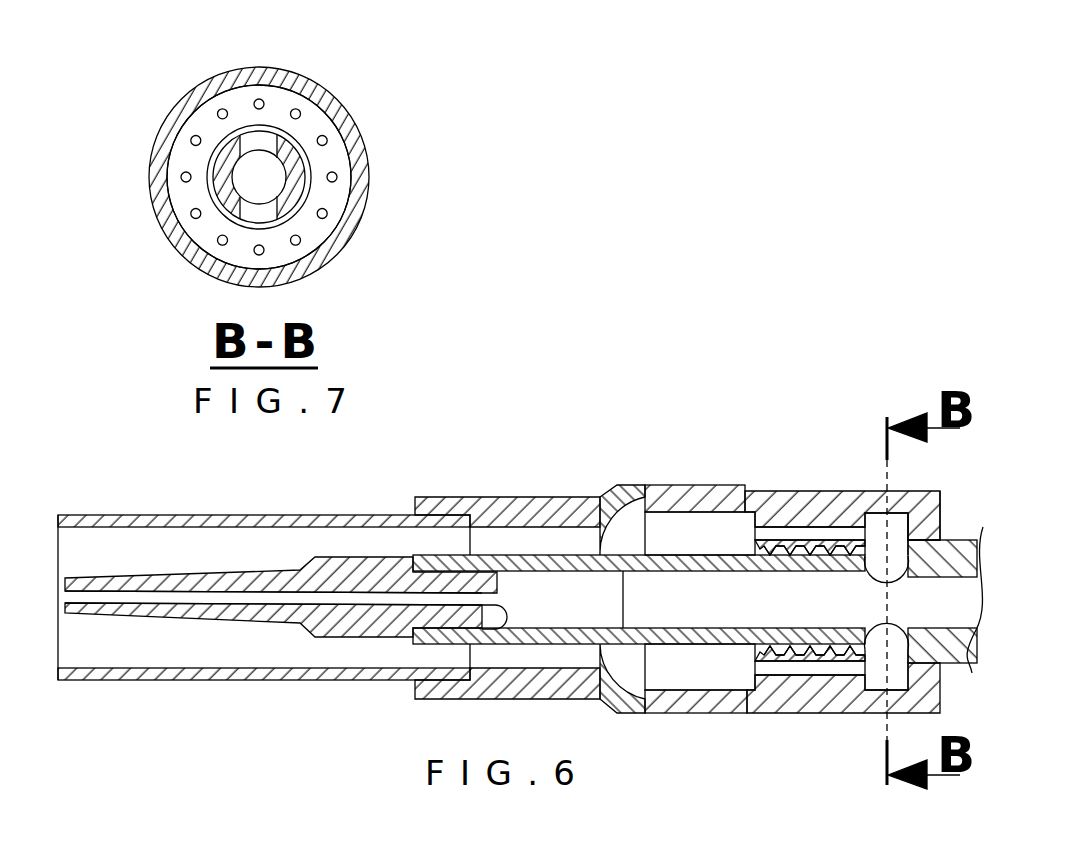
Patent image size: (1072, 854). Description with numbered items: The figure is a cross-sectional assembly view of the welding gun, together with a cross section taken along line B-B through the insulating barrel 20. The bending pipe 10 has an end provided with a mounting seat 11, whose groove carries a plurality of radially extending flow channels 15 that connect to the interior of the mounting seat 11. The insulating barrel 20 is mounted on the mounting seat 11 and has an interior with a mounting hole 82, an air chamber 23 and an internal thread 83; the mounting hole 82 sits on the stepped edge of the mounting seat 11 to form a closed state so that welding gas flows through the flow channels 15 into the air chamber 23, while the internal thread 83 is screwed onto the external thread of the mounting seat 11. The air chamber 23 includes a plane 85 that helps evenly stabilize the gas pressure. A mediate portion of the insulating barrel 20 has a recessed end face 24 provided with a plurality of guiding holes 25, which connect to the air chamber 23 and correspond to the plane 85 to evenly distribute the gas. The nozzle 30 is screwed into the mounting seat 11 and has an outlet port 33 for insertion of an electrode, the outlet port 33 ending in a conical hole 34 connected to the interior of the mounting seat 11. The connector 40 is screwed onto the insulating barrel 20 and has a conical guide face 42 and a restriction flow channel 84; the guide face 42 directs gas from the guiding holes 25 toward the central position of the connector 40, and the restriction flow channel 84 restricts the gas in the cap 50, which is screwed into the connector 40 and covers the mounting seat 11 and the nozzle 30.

In FIG. 6, the bending pipe 10 is at (965, 653).
In FIG. 7, the mounting seat 11 is at (290, 165).
In FIG. 6, the mounting seat 11 is at (553, 635).
In FIG. 7, the flow channels 15 is at (260, 140).
In FIG. 6, the flow channels 15 is at (890, 572).
In FIG. 7, the insulating barrel 20 is at (168, 138).
In FIG. 6, the insulating barrel 20 is at (793, 697).
In FIG. 6, the air chamber 23 is at (877, 513).
In FIG. 7, the recessed end face 24 is at (328, 200).
In FIG. 6, the recessed end face 24 is at (753, 658).
In FIG. 7, the guiding holes 25 is at (181, 177).
In FIG. 6, the guiding holes 25 is at (787, 535).
In FIG. 6, the nozzle 30 is at (337, 627).
In FIG. 6, the outlet port 33 is at (205, 597).
In FIG. 6, the conical hole 34 is at (500, 630).
In FIG. 6, the connector 40 is at (657, 485).
In FIG. 6, the conical guide face 42 is at (612, 502).
In FIG. 6, the cap 50 is at (318, 526).
In FIG. 6, the mounting hole 82 is at (925, 545).
In FIG. 7, the internal thread 83 is at (223, 212).
In FIG. 6, the internal thread 83 is at (813, 650).
In FIG. 6, the restriction flow channel 84 is at (530, 545).
In FIG. 6, the plane 85 is at (865, 657).